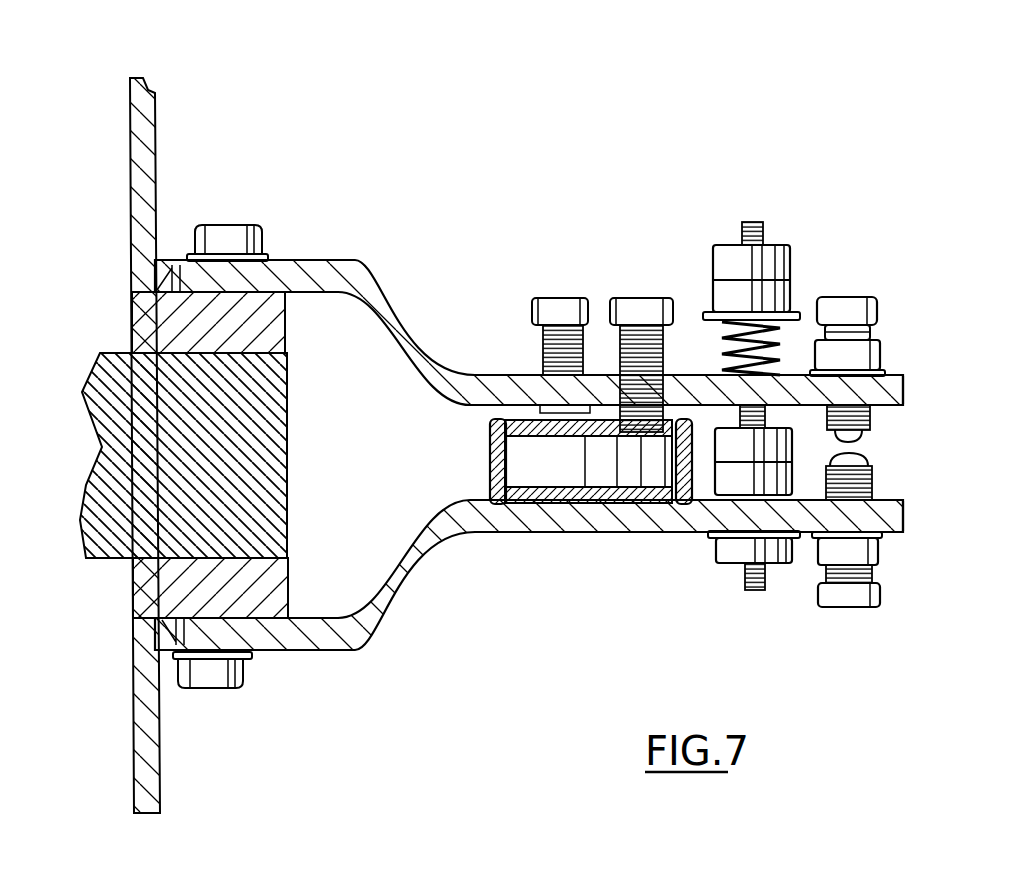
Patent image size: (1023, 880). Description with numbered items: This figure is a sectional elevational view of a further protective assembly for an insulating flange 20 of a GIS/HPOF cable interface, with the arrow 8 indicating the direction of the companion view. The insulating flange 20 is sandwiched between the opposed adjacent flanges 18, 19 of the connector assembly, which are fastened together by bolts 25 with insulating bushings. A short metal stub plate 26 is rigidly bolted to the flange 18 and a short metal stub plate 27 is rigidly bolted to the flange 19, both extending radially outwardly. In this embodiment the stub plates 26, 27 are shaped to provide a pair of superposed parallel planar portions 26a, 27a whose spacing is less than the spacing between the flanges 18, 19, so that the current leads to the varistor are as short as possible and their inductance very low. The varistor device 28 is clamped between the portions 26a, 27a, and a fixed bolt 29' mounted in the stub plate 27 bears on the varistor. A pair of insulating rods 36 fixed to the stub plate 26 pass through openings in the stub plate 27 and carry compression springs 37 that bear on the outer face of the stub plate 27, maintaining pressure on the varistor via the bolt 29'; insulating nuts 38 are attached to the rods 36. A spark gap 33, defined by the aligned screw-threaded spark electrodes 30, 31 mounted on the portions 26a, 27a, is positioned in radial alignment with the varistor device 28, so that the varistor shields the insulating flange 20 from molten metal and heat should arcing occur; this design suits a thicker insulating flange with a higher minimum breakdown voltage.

The view arrow 8 is at (581, 118).
The flange 18 is at (133, 585).
The flange 19 is at (130, 327).
The insulating flange 20 is at (288, 437).
The bolt 25 is at (230, 224).
The stub plate 26 is at (905, 517).
The planar portion 26a is at (895, 492).
The stub plate 27 is at (904, 390).
The planar portion 27a is at (887, 406).
The varistor device 28 is at (488, 462).
The bolt 29' is at (550, 325).
The spark gap electrode 30 is at (880, 593).
The spark gap electrode 31 is at (878, 310).
The spark gap 33 is at (872, 447).
The insulating rod 36 is at (745, 222).
The compression spring 37 is at (722, 345).
The nut 38 is at (727, 574).